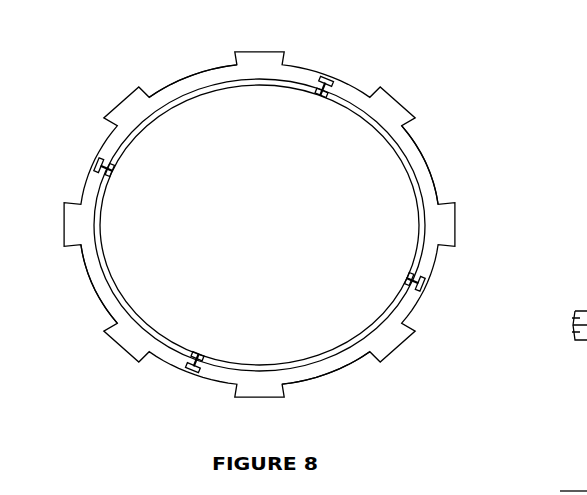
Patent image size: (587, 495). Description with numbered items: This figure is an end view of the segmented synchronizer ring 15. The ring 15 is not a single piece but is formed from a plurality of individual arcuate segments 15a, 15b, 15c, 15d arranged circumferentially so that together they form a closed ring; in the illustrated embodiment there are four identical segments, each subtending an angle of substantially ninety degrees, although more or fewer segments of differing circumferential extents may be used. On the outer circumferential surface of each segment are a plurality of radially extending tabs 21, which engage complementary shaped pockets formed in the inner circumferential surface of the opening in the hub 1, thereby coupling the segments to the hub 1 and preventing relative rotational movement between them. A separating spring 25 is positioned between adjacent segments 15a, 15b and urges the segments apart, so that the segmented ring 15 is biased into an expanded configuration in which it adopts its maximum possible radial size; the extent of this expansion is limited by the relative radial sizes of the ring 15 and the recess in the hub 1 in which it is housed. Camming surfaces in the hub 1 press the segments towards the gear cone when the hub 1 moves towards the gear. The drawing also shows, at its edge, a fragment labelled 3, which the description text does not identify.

The segmented synchronizer ring 15 is at (145, 84).
The arcuate segment 15a is at (187, 86).
The arcuate segment 15b is at (408, 144).
The arcuate segment 15c is at (352, 356).
The arcuate segment 15d is at (102, 289).
The separating spring 25 is at (323, 92).
The radially extending tab 21 is at (506, 274).
The hub 1 is at (572, 316).
The shaft 3 is at (586, 411).